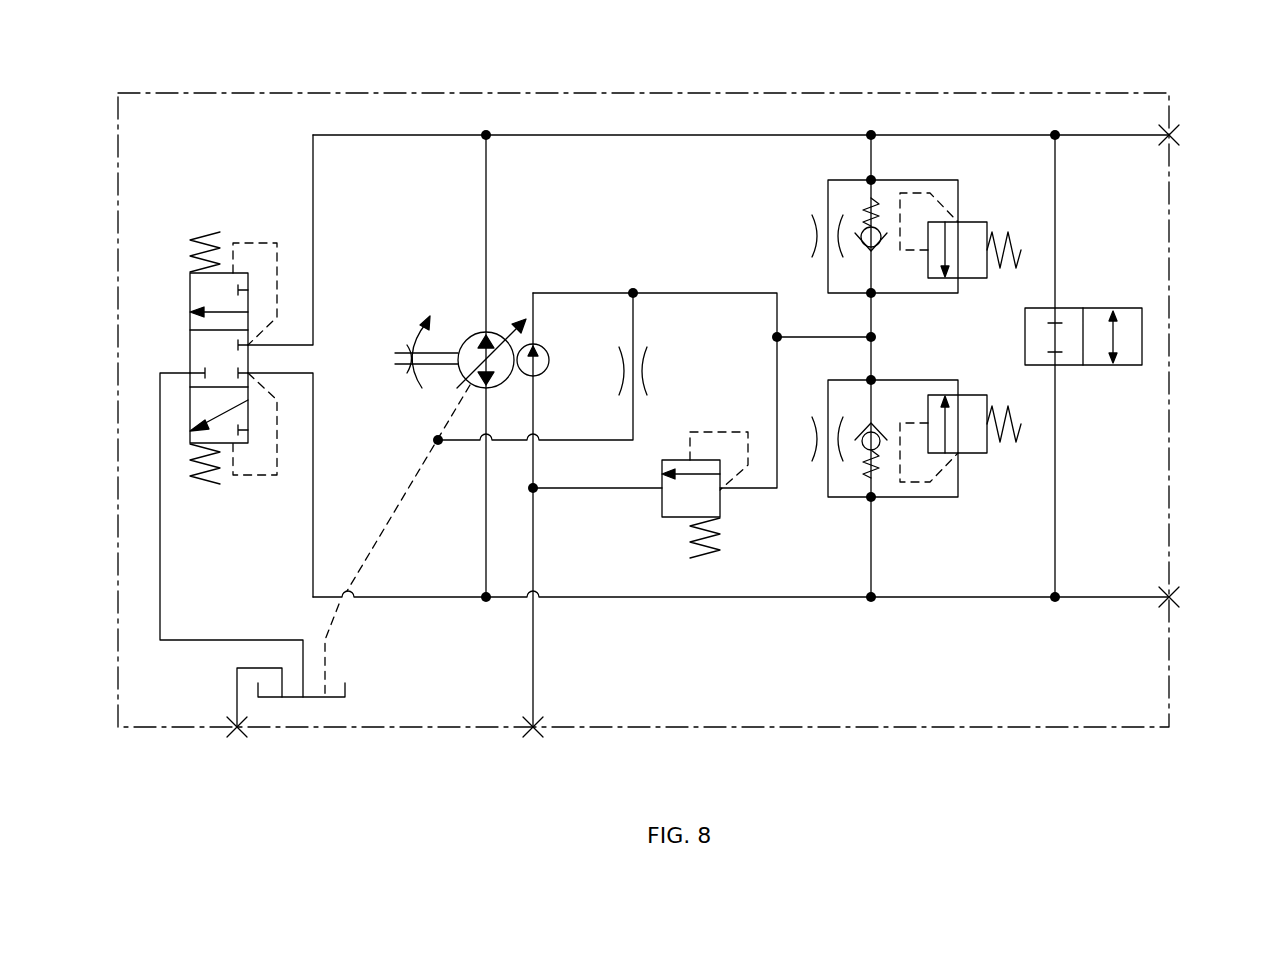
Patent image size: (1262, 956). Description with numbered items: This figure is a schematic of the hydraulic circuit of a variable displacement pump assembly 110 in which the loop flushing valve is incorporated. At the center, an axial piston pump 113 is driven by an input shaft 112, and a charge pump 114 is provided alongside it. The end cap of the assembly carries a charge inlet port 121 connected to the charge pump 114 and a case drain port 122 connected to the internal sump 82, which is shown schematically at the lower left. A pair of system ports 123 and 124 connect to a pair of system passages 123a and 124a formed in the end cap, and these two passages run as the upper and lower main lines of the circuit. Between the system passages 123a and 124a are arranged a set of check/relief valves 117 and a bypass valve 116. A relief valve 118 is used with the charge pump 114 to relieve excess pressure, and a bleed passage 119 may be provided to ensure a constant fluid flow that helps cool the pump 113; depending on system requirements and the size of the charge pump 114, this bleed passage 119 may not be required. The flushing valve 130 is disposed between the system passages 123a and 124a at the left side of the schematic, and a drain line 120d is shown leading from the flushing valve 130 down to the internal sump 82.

The variable displacement pump assembly 110 is at (1152, 93).
The input shaft 112 is at (404, 368).
The axial piston pump 113 is at (476, 335).
The charge pump 114 is at (540, 353).
The bypass valve 116 is at (1082, 303).
The check/relief valves 117 is at (984, 209).
The relief valve 118 is at (644, 517).
The bleed passage 119 is at (661, 371).
The drain conduit 120d is at (160, 545).
The charge inlet port 121 is at (537, 740).
The case drain port 122 is at (243, 740).
The system port 123 is at (1182, 130).
The system port 124 is at (1182, 592).
The system passage 123a is at (313, 257).
The system passage 124a is at (313, 468).
The flushing valve 130 is at (220, 211).
The internal sump 82 is at (348, 690).